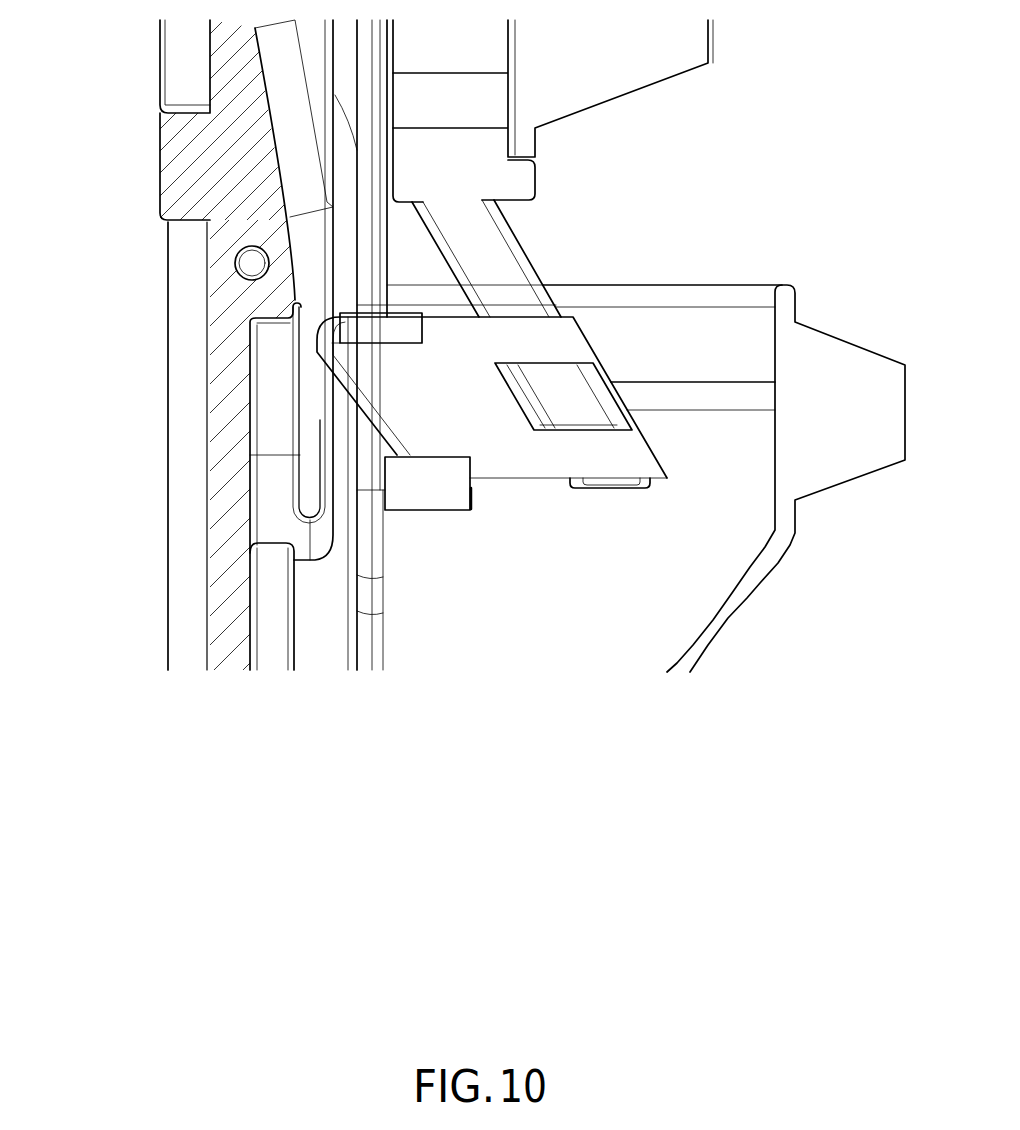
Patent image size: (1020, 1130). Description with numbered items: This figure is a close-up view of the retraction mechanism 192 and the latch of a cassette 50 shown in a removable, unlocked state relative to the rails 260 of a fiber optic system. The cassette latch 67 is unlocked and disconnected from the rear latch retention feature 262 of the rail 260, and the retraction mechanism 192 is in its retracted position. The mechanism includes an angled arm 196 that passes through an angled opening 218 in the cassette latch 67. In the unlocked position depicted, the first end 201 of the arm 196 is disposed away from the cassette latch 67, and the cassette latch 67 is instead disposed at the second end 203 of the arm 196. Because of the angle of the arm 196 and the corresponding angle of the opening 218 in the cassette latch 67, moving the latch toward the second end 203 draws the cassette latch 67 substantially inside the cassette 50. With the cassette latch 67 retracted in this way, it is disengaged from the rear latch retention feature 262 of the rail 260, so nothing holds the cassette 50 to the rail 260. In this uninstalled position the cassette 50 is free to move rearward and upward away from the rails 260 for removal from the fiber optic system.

The cassette 50 is at (730, 597).
The cassette latch 67 is at (448, 413).
The retraction mechanism 192 is at (500, 173).
The arm 196 is at (495, 270).
The first end 201 is at (468, 225).
The second end 203 is at (612, 483).
The opening 218 is at (603, 428).
The rail 260 is at (188, 348).
The rear latch retention feature 262 is at (267, 317).